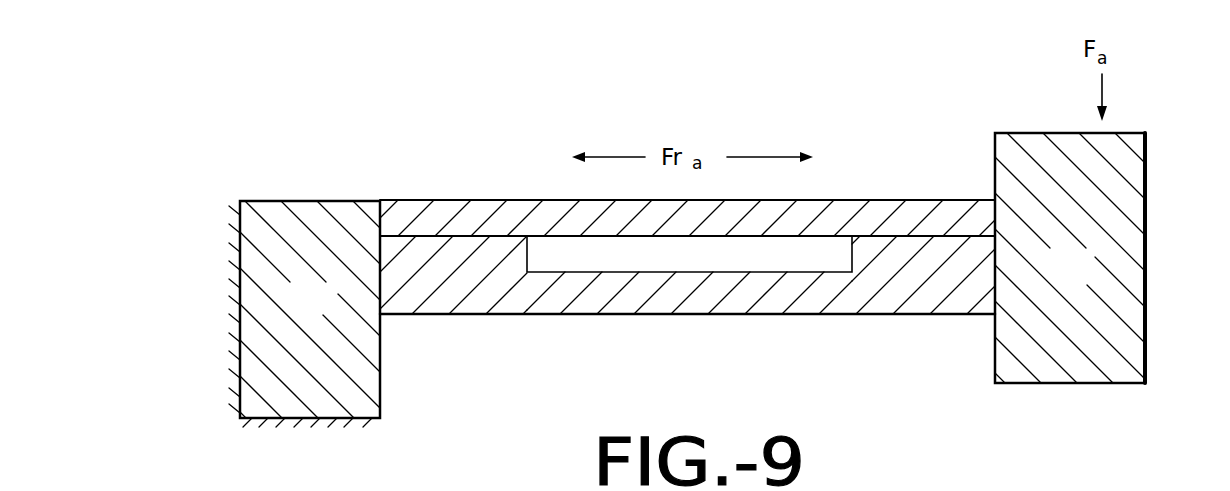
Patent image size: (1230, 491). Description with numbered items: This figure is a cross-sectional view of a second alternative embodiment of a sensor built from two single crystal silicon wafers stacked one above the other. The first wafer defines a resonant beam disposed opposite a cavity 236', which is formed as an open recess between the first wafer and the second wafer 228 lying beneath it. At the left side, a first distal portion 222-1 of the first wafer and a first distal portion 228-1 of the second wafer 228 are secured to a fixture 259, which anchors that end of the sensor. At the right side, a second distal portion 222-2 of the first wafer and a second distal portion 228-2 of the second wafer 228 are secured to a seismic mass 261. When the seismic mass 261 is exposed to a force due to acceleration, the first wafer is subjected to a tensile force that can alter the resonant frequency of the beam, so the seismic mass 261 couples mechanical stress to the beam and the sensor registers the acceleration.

The first distal portion of first wafer 222-1 is at (393, 190).
The second distal portion of first wafer 222-2 is at (982, 190).
The second single crystal silicon wafer 228 is at (803, 300).
The first distal portion of second wafer 228-1 is at (396, 335).
The second distal portion of second wafer 228-2 is at (984, 340).
The cavity 236' is at (670, 299).
The fixture 259 is at (335, 312).
The seismic mass 261 is at (1093, 278).